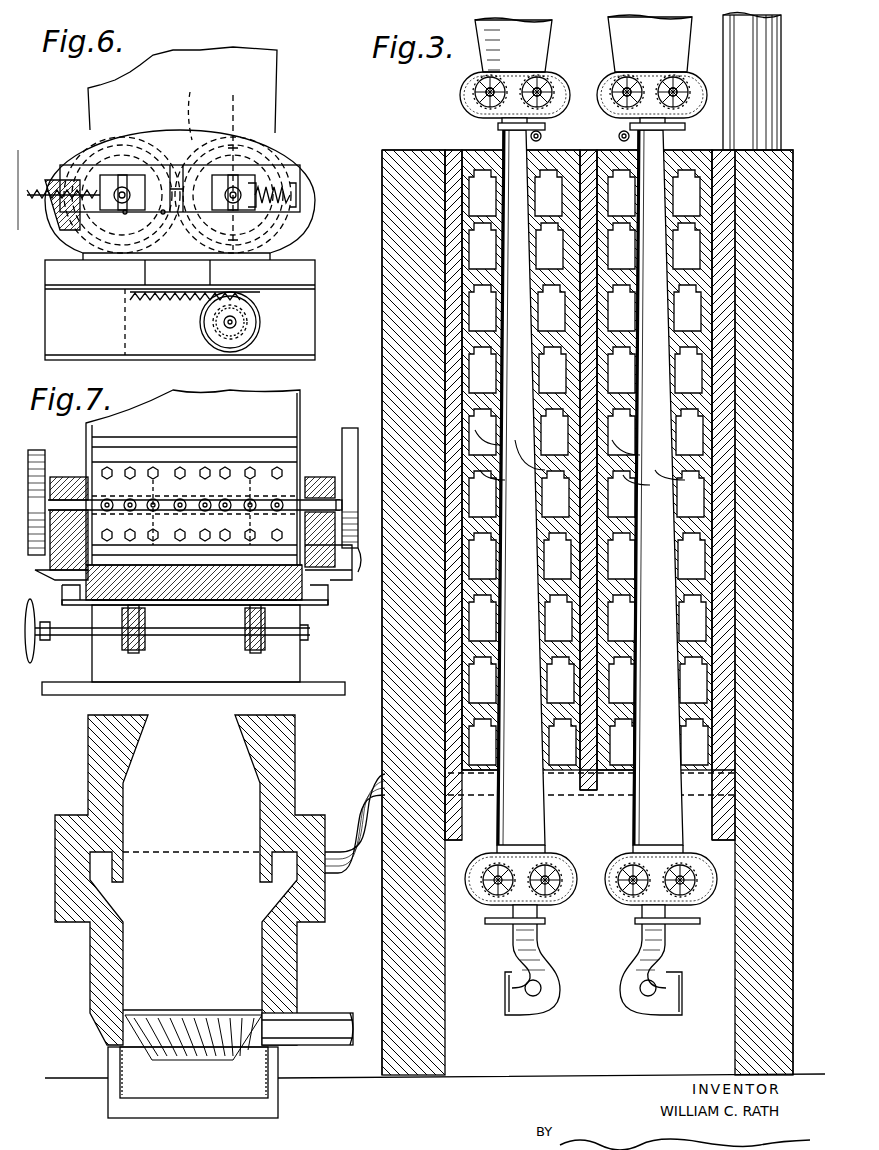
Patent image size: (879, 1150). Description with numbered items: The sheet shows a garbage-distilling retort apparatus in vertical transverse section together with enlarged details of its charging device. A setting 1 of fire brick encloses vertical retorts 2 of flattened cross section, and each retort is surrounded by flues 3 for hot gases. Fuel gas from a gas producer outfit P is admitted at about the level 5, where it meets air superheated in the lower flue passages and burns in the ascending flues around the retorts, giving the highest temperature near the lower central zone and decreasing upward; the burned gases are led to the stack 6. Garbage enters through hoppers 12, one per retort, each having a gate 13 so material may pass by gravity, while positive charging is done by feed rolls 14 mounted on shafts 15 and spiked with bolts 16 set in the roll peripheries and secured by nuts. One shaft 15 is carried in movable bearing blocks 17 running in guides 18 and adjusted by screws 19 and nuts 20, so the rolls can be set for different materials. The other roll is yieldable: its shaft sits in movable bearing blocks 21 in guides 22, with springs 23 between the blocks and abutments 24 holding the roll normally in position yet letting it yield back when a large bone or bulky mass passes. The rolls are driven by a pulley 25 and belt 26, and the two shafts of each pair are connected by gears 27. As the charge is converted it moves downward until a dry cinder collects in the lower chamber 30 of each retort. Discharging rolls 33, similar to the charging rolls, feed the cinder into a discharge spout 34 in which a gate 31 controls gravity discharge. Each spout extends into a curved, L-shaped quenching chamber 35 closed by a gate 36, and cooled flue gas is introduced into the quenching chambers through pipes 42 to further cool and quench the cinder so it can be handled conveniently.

In FIG. 3, the setting 1 is at (785, 368).
In FIG. 3, the vertical retort 2 is at (650, 1062).
In FIG. 3, the flue 3 is at (535, 465).
In FIG. 3, the gas admission level 5 is at (700, 630).
In FIG. 3, the stack 6 is at (784, 100).
In FIG. 3, the hopper 12 is at (476, 28).
In FIG. 6, the hopper 12 is at (222, 48).
In FIG. 3, the gate 13 is at (615, 130).
In FIG. 6, the gate 13 is at (125, 300).
In FIG. 7, the gate 13 is at (202, 605).
In FIG. 3, the feed roll 14 is at (532, 78).
In FIG. 6, the feed roll 14 is at (110, 165).
In FIG. 7, the feed roll 14 is at (265, 462).
In FIG. 3, the roll shaft 15 is at (542, 88).
In FIG. 6, the roll shaft 15 is at (124, 188).
In FIG. 7, the roll shaft 15 is at (72, 500).
In FIG. 3, the bolt 16 is at (462, 92).
In FIG. 7, the bolt 16 is at (250, 465).
In FIG. 6, the movable bearing block 17 is at (133, 185).
In FIG. 6, the guide 18 is at (125, 215).
In FIG. 6, the screw 19 is at (30, 185).
In FIG. 6, the nut 20 is at (58, 222).
In FIG. 6, the movable bearing block 21 is at (228, 182).
In FIG. 7, the movable bearing block 21 is at (58, 477).
In FIG. 6, the guide 22 is at (255, 190).
In FIG. 7, the guide 22 is at (308, 480).
In FIG. 6, the spring 23 is at (270, 185).
In FIG. 6, the abutment 24 is at (296, 197).
In FIG. 6, the pulley 25 is at (280, 253).
In FIG. 7, the pulley 25 is at (363, 566).
In FIG. 6, the belt 26 is at (191, 106).
In FIG. 7, the belt 26 is at (353, 428).
In FIG. 6, the gear 27 is at (78, 150).
In FIG. 7, the gear 27 is at (36, 450).
In FIG. 3, the lower chamber 30 is at (590, 827).
In FIG. 3, the gate 31 is at (490, 924).
In FIG. 3, the discharging roll 33 is at (610, 868).
In FIG. 3, the discharge spout 34 is at (640, 900).
In FIG. 3, the quenching chamber 35 is at (612, 990).
In FIG. 3, the gate 36 is at (505, 1000).
In FIG. 3, the pipe 42 is at (533, 996).
In FIG. 3, the gas producer outfit P is at (220, 916).